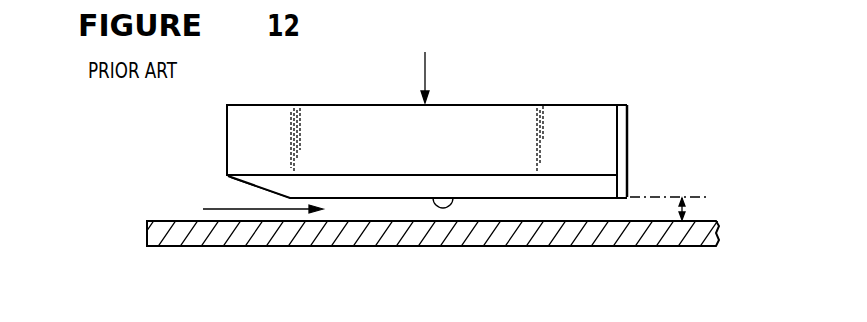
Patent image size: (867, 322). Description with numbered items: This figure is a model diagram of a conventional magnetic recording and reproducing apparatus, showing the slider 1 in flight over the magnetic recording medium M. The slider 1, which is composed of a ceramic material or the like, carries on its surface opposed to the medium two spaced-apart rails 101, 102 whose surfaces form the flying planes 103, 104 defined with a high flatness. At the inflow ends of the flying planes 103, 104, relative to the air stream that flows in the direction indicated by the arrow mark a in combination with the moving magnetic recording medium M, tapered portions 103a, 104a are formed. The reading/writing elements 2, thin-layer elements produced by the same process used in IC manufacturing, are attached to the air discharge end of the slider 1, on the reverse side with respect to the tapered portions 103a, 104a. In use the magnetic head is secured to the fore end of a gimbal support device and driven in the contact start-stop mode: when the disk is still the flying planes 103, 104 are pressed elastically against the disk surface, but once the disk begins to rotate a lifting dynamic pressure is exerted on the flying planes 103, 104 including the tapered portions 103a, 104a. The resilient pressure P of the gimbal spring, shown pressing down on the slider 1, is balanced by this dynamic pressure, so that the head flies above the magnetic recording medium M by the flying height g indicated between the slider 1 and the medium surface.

The slider 1 is at (593, 120).
The reading/writing elements 2 is at (628, 186).
The rail 101 is at (565, 193).
The rail 102 is at (461, 130).
The flying plane 103 is at (447, 199).
The flying plane 104 is at (497, 135).
The tapered portion 103a is at (250, 188).
The tapered portion 104a is at (305, 128).
The resilient pressure of the gimbal spring P is at (428, 50).
The arrow mark indicating air stream direction a is at (223, 208).
The flying height g is at (686, 210).
The magnetic recording medium M is at (493, 232).